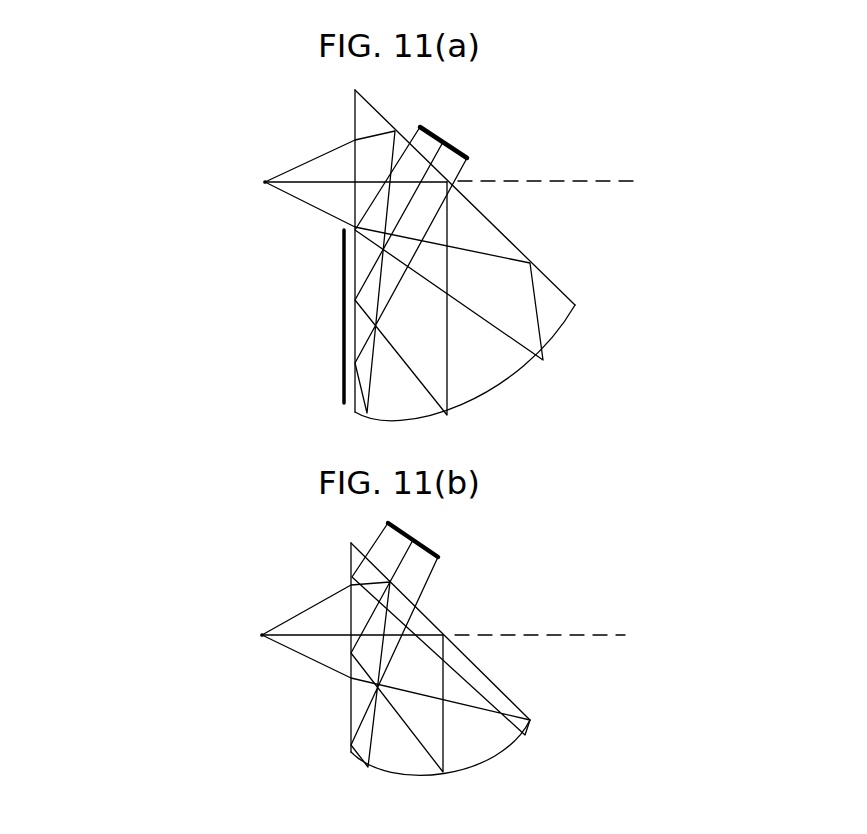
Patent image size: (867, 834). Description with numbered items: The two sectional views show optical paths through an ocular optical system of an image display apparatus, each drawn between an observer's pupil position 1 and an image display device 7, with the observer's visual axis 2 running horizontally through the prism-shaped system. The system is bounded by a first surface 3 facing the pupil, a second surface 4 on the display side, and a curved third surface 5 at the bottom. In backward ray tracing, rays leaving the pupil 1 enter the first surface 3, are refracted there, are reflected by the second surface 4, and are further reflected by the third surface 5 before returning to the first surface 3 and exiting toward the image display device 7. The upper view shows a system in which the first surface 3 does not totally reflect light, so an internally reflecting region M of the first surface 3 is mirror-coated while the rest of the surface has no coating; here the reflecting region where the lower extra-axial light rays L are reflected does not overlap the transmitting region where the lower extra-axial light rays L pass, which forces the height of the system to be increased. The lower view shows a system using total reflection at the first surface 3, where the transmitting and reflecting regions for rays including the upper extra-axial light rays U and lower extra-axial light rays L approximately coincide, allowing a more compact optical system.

In FIG. 11A, the observer's pupil position 1 is at (265, 182).
In FIG. 11B, the observer's pupil position 1 is at (262, 635).
In FIG. 11A, the observer's visual axis 2 is at (583, 183).
In FIG. 11B, the observer's visual axis 2 is at (584, 633).
In FIG. 11A, the first surface 3 is at (355, 207).
In FIG. 11B, the first surface 3 is at (350, 697).
In FIG. 11A, the second surface 4 is at (522, 256).
In FIG. 11B, the second surface 4 is at (498, 688).
In FIG. 11A, the third surface 5 is at (510, 393).
In FIG. 11B, the third surface 5 is at (482, 765).
In FIG. 11A, the image display device 7 is at (462, 150).
In FIG. 11B, the image display device 7 is at (408, 533).
In FIG. 11A, the upper extra-axial light rays U is at (323, 155).
In FIG. 11B, the upper extra-axial light rays U is at (302, 616).
In FIG. 11A, the lower extra-axial light rays L is at (300, 201).
In FIG. 11B, the lower extra-axial light rays L is at (306, 657).
In FIG. 11A, the internally reflecting region M is at (342, 357).